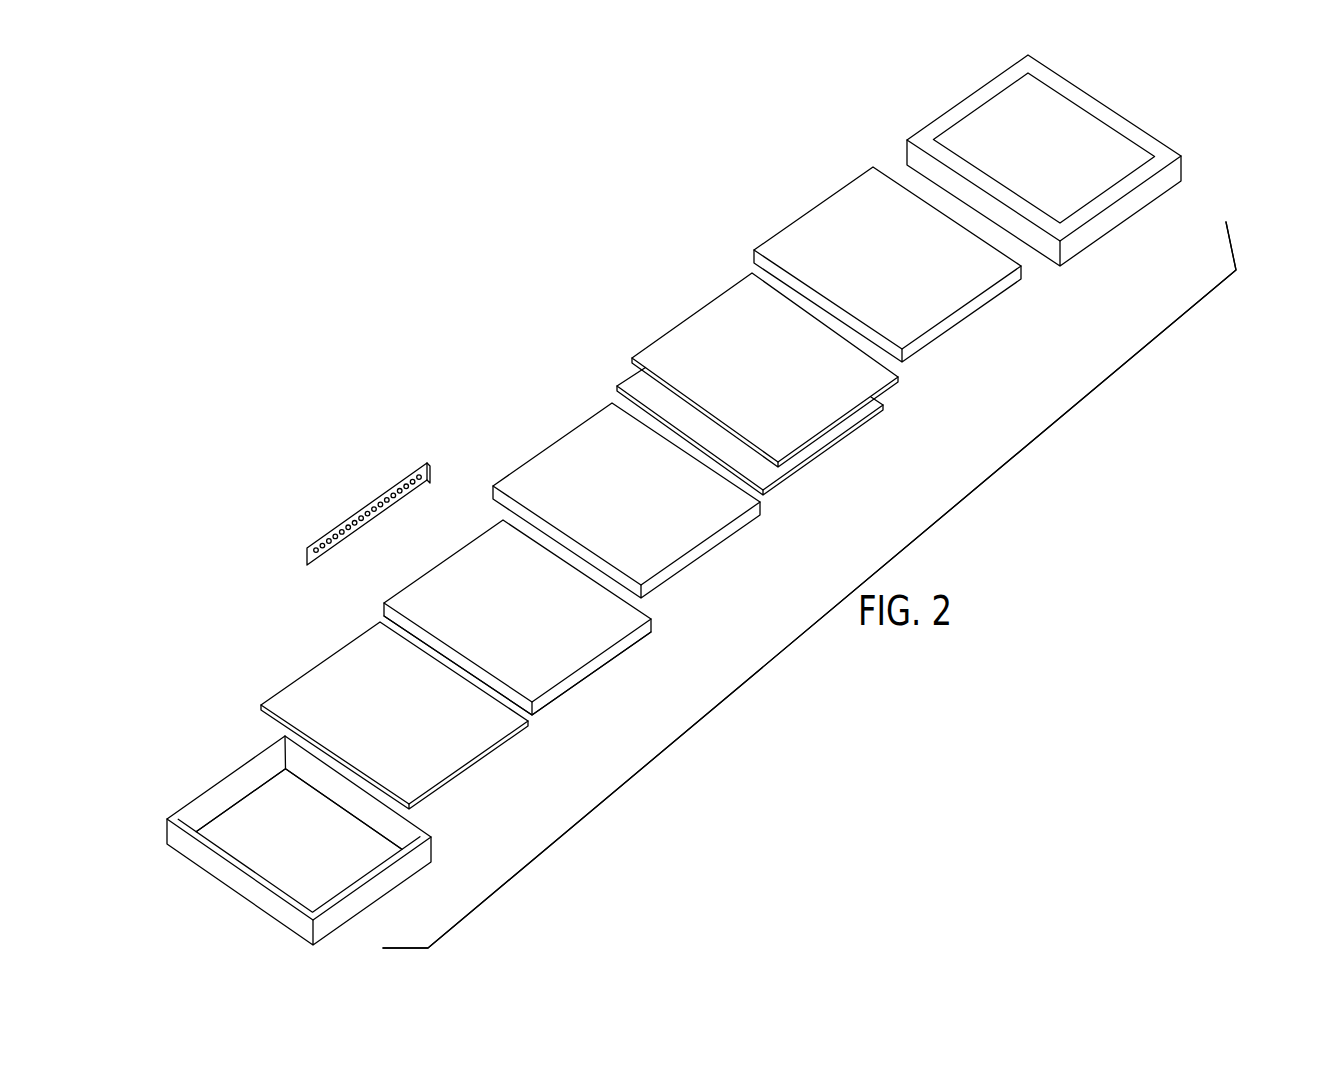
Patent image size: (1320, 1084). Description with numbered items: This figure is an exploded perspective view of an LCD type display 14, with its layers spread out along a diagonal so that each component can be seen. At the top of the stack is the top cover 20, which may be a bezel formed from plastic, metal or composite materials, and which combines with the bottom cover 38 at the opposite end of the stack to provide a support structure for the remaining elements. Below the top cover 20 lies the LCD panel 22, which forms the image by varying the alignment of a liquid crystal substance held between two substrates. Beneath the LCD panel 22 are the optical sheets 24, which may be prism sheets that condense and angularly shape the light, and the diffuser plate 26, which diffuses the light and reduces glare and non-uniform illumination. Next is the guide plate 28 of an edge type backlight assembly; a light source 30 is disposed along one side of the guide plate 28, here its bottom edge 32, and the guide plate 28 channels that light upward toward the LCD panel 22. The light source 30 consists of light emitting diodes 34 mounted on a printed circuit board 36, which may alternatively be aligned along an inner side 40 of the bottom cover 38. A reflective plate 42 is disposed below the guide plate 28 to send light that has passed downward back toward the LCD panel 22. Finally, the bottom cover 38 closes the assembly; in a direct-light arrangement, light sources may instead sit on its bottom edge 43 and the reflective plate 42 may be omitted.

The display 14 is at (445, 197).
The top cover 20 is at (1080, 253).
The LCD panel 22 is at (967, 323).
The optical sheets 24 is at (845, 418).
The diffuser plate 26 is at (740, 532).
The guide plate 28 is at (590, 678).
The light source 30 is at (307, 503).
The bottom edge 32 is at (532, 715).
The light emitting diodes 34 is at (392, 492).
The printed circuit board 36 is at (430, 474).
The bottom cover 38 is at (410, 878).
The inner side 40 is at (303, 762).
The reflective plate 42 is at (463, 770).
The bottom edge 43 is at (270, 827).